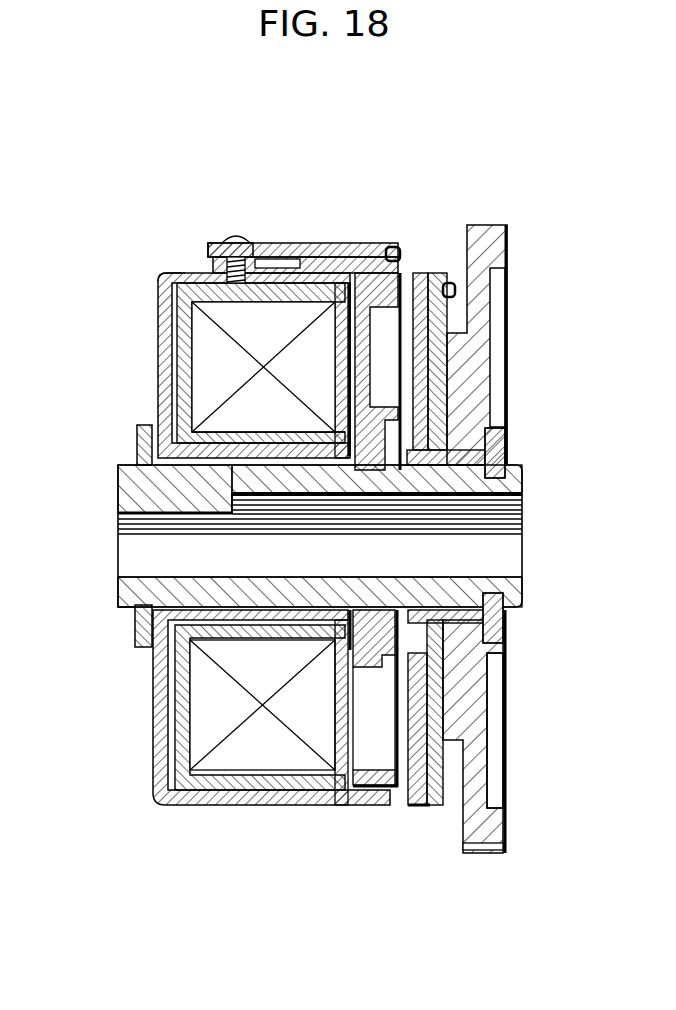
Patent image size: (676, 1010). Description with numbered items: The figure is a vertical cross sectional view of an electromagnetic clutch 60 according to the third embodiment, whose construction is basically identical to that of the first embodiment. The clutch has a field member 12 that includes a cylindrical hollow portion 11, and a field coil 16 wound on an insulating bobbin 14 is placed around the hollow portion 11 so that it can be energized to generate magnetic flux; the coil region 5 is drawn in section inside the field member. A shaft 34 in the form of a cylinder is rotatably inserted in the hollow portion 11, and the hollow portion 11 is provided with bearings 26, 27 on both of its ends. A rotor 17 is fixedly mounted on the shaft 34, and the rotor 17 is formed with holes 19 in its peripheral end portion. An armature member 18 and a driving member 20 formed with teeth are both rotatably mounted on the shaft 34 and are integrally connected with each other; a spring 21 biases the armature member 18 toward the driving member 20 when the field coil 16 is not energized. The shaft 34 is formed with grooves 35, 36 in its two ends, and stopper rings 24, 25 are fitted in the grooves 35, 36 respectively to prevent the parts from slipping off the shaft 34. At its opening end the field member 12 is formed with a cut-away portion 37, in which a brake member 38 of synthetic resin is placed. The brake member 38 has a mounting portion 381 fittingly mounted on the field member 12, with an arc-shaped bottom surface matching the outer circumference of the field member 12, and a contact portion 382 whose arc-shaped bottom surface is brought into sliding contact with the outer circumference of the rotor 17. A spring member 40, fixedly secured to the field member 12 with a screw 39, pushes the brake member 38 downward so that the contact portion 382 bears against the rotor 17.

The electromagnetic clutch 60 is at (343, 116).
The shaft 34 is at (120, 488).
The bearing 26 is at (172, 472).
The bearing 27 is at (335, 497).
The rotor 17 is at (398, 497).
The field coil 16 is at (200, 345).
The field member 12 is at (170, 275).
The bobbin 14 is at (180, 387).
The coil 5 is at (258, 290).
The hollow portion 11 is at (258, 440).
The spring member 40 is at (322, 243).
The mounting portion 381 is at (285, 258).
The screw 39 is at (226, 233).
The brake member 38 is at (397, 247).
The cut-away portion 37 is at (362, 257).
The contact portion 382 is at (415, 272).
The driving member 20 is at (500, 835).
The stopper ring 24 is at (138, 647).
The groove 35 is at (135, 612).
The holes 19 is at (370, 767).
The armature member 18 is at (410, 800).
The spring 21 is at (430, 806).
The groove 36 is at (502, 622).
The stopper ring 25 is at (502, 647).